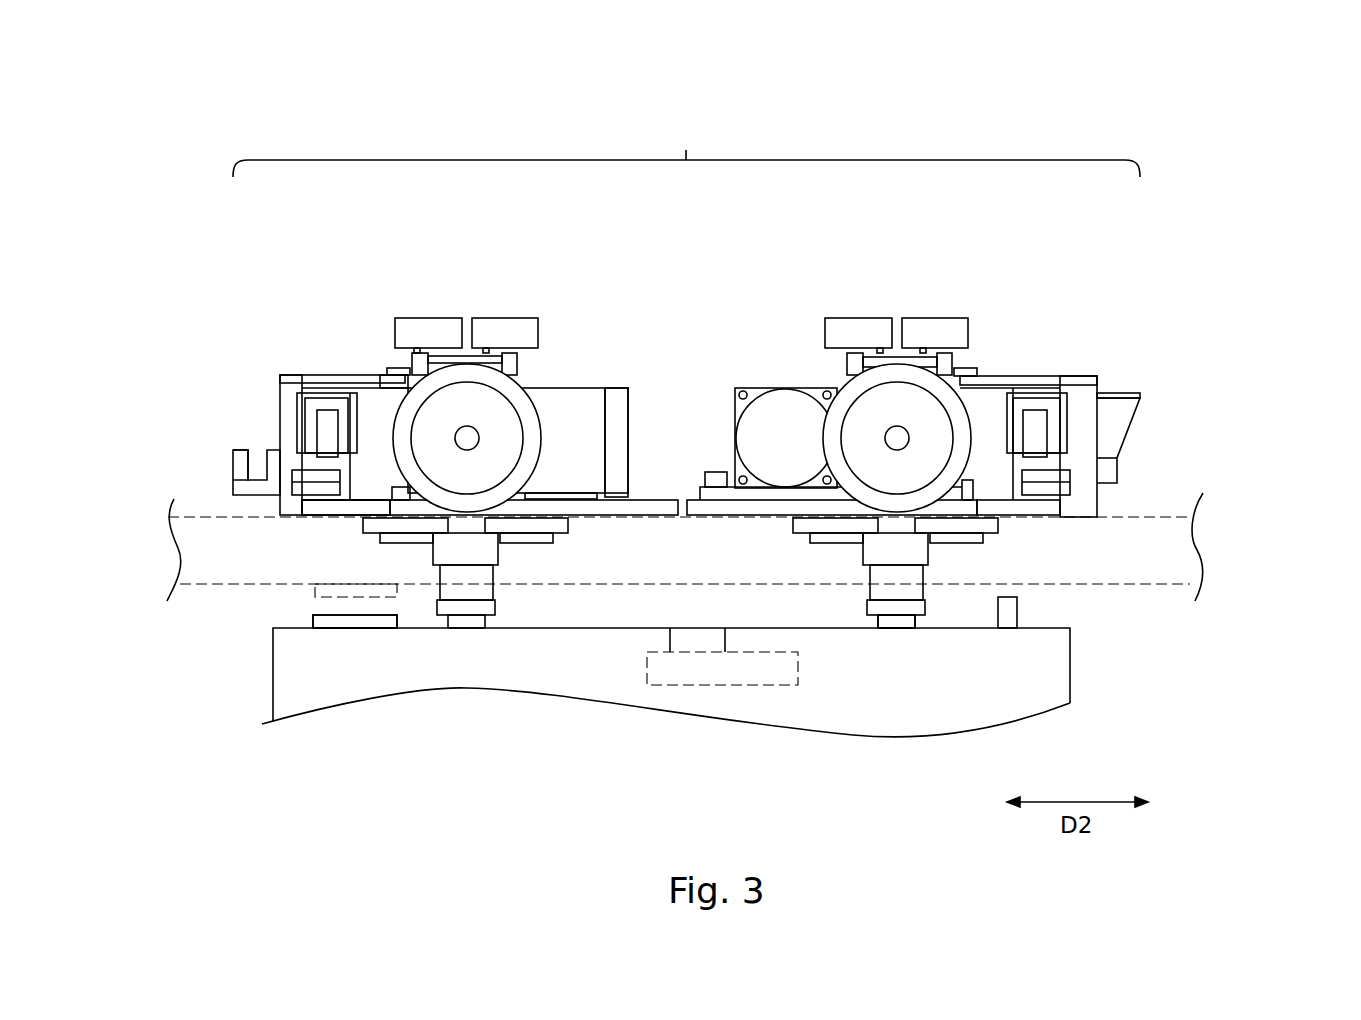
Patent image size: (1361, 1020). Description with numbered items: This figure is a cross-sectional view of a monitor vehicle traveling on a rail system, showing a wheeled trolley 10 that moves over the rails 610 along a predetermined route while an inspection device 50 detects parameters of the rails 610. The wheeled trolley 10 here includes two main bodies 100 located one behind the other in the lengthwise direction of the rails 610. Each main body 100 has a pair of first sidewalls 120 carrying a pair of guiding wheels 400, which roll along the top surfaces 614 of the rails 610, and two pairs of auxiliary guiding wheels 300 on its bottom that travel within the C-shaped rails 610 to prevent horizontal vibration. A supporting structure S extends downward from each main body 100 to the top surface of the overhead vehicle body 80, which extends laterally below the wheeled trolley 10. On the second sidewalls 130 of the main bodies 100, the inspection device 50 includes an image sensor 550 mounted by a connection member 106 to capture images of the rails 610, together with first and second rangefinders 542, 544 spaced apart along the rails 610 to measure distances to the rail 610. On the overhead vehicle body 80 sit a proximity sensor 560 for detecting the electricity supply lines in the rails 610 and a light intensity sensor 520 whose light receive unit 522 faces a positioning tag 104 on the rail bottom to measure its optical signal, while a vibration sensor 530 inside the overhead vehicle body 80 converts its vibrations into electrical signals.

The wheeled trolley 10 is at (686, 150).
The inspection device 50 is at (1291, 43).
The overhead vehicle body 80 is at (1045, 672).
The main body 100 is at (617, 388).
The positioning tag 104 is at (353, 590).
The connection member 106 is at (1105, 397).
The first sidewall 120 is at (593, 388).
The second sidewall 130 is at (279, 376).
The auxiliary guiding wheel 300 is at (410, 523).
The guiding wheel 400 is at (510, 390).
The light intensity sensor 520 is at (328, 632).
The light receive unit 522 is at (328, 615).
The vibration sensor 530 is at (673, 687).
The first rangefinder 542 is at (268, 452).
The second rangefinder 544 is at (240, 449).
The image sensor 550 is at (1113, 425).
The proximity sensor 560 is at (1018, 603).
The rail 610 is at (1187, 557).
The top surface 614 is at (162, 524).
The supporting structure S is at (897, 623).